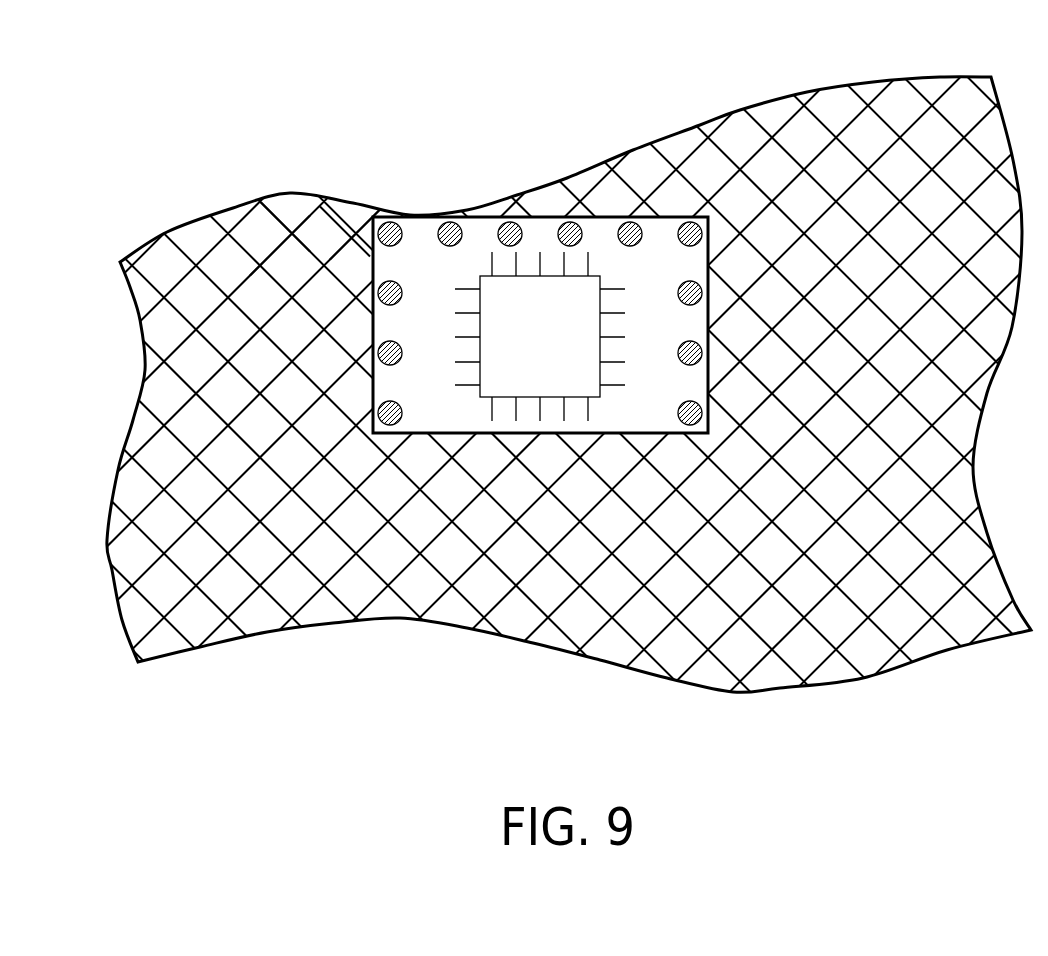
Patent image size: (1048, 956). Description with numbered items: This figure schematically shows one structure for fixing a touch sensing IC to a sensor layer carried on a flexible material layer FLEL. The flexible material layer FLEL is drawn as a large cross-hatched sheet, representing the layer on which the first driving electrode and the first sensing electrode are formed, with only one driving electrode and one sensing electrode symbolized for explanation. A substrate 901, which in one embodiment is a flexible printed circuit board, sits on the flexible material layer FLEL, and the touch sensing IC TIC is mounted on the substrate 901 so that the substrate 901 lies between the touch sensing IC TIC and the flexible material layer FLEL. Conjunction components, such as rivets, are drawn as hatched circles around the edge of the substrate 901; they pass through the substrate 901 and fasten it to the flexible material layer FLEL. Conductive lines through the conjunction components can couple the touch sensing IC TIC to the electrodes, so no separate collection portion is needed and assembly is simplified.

The flexible material layer FLEL is at (768, 115).
The substrate 901 is at (478, 230).
The touch sensing IC TIC is at (540, 336).